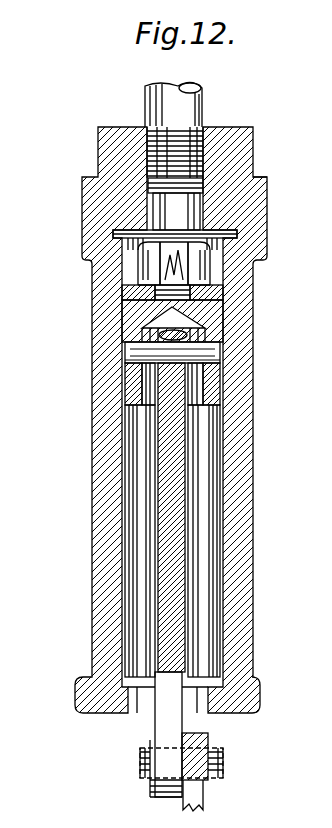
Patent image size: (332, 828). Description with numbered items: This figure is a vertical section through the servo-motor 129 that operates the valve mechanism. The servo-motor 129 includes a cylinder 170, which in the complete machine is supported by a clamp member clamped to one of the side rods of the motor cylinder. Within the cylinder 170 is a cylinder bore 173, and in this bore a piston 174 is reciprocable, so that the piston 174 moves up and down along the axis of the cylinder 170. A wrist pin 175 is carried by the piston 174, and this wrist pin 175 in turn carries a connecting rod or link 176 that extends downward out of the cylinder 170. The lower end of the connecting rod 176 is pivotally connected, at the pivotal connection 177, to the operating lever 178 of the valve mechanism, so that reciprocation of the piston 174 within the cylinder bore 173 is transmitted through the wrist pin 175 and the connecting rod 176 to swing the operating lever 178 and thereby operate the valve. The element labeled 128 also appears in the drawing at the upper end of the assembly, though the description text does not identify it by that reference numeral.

The threaded shaft with eye 128 is at (197, 107).
The servo-motor 129 is at (268, 248).
The cylinder 170 is at (252, 522).
The cylinder bore 173 is at (122, 485).
The piston 174 is at (218, 320).
The wrist pin 175 is at (215, 352).
The connecting rod 176 is at (175, 595).
The pivotal connection 177 is at (165, 752).
The operating lever 178 is at (203, 797).